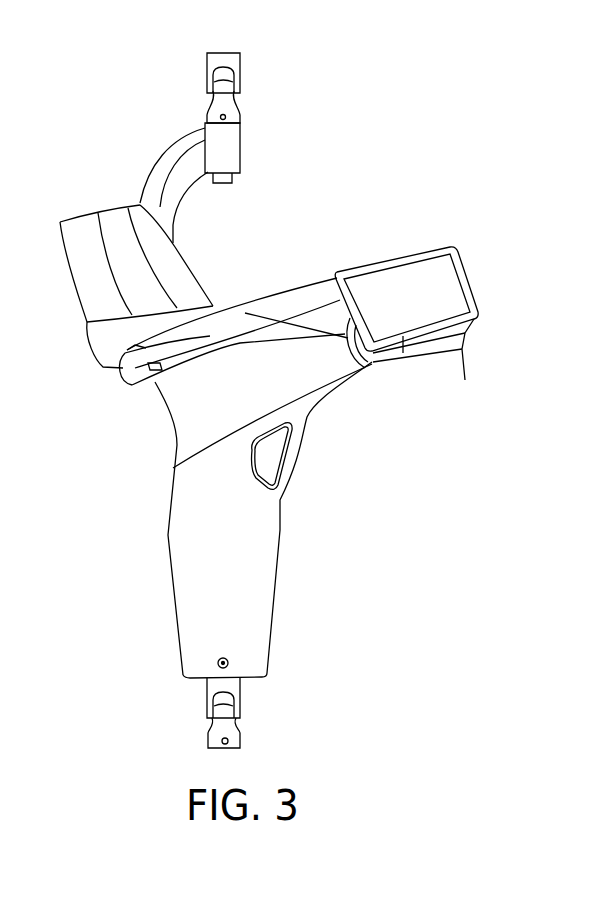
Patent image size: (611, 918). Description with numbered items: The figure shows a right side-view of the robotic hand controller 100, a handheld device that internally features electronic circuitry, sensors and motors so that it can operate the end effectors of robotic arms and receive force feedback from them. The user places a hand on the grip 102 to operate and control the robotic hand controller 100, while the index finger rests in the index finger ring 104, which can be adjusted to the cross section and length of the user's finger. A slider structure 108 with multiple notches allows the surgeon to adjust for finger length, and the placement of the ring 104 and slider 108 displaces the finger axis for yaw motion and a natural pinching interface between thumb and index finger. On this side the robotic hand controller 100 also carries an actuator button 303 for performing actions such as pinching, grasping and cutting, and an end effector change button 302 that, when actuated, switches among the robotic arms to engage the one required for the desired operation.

The robotic hand controller 100 is at (490, 694).
The grip 102 is at (167, 543).
The index finger ring 104 is at (465, 380).
The slider structure 108 is at (403, 353).
The end effector change button 302 is at (268, 458).
The actuator button 303 is at (222, 343).